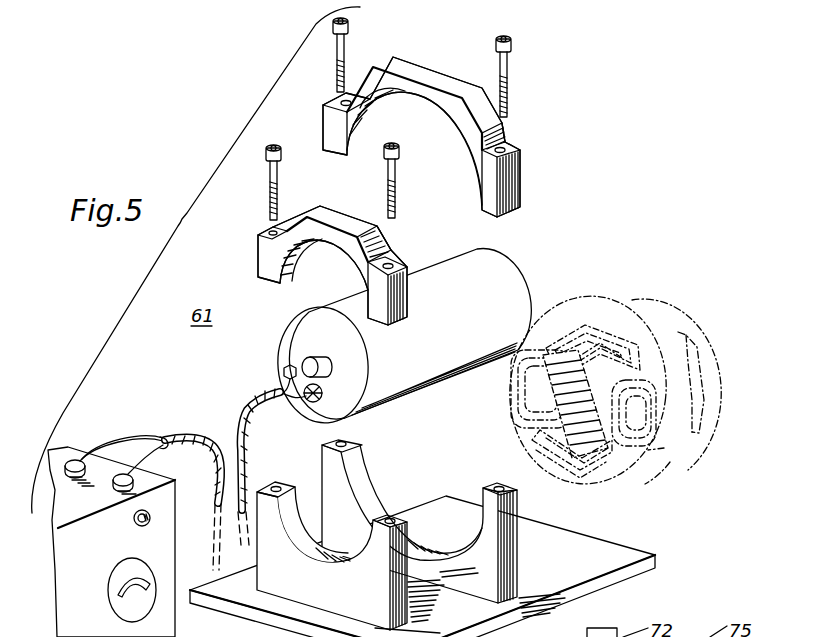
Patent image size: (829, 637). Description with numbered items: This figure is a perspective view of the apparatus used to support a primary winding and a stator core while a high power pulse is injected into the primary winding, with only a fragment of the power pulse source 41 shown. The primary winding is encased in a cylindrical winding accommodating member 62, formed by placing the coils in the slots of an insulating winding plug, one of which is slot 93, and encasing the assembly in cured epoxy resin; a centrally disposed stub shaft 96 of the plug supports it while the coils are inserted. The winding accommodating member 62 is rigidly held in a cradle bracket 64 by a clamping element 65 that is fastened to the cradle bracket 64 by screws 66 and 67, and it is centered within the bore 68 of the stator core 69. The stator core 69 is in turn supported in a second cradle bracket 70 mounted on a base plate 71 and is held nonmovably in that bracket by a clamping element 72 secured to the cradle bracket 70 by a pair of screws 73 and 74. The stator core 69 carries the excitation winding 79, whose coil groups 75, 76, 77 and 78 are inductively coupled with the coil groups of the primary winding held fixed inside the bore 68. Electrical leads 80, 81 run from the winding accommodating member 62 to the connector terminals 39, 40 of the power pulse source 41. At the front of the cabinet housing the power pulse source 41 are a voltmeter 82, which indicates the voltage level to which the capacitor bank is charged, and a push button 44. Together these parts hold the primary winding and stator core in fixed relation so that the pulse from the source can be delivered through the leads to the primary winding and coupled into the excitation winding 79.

The connector terminal 39 is at (77, 462).
The connector terminal 40 is at (118, 488).
The power pulse source 41 is at (58, 518).
The push button 44 is at (150, 518).
The winding accommodating member 62 is at (506, 279).
The cradle bracket 64 is at (407, 590).
The clamping element 65 is at (340, 219).
The screw 66 is at (280, 186).
The screw 67 is at (400, 189).
The bore 68 is at (545, 437).
The stator core 69 is at (647, 324).
The cradle bracket 70 is at (512, 552).
The base plate 71 is at (632, 543).
The clamping element 72 is at (430, 74).
The screw 73 is at (347, 53).
The screw 74 is at (512, 84).
The coil group 75 is at (544, 345).
The coil group 76 is at (664, 448).
The coil group 77 is at (557, 470).
The coil group 78 is at (518, 421).
The excitation winding 79 is at (505, 404).
The electrical lead 80 is at (128, 447).
The electrical lead 81 is at (160, 470).
The voltmeter 82 is at (127, 571).
The slot 93 is at (153, 632).
The stub shaft 96 is at (303, 355).